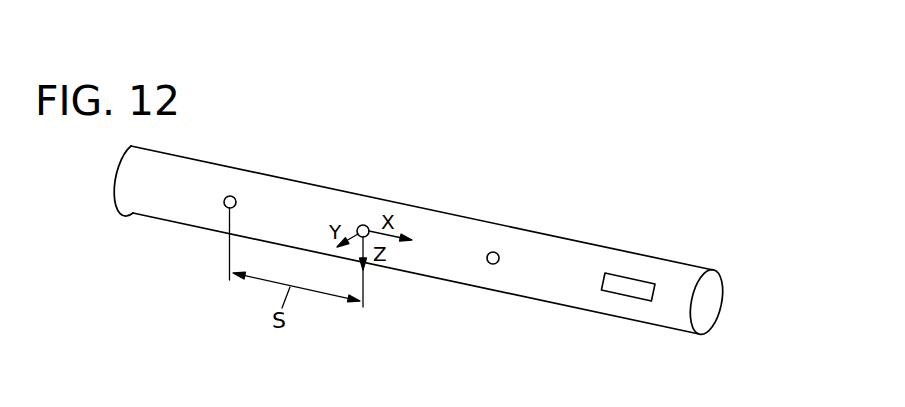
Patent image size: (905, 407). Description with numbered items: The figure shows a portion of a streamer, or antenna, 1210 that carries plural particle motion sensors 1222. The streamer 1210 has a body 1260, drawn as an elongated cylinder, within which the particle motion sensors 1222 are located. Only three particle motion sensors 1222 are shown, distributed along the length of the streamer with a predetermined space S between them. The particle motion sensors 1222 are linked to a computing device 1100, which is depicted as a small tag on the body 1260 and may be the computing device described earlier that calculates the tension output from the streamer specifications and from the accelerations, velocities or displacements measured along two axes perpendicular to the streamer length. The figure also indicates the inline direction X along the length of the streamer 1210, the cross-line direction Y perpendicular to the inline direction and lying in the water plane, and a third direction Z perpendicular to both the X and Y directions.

The streamer 1210 is at (421, 241).
The particle motion sensors 1222 is at (212, 213).
The body 1260 is at (598, 245).
The computing device 1100 is at (627, 292).